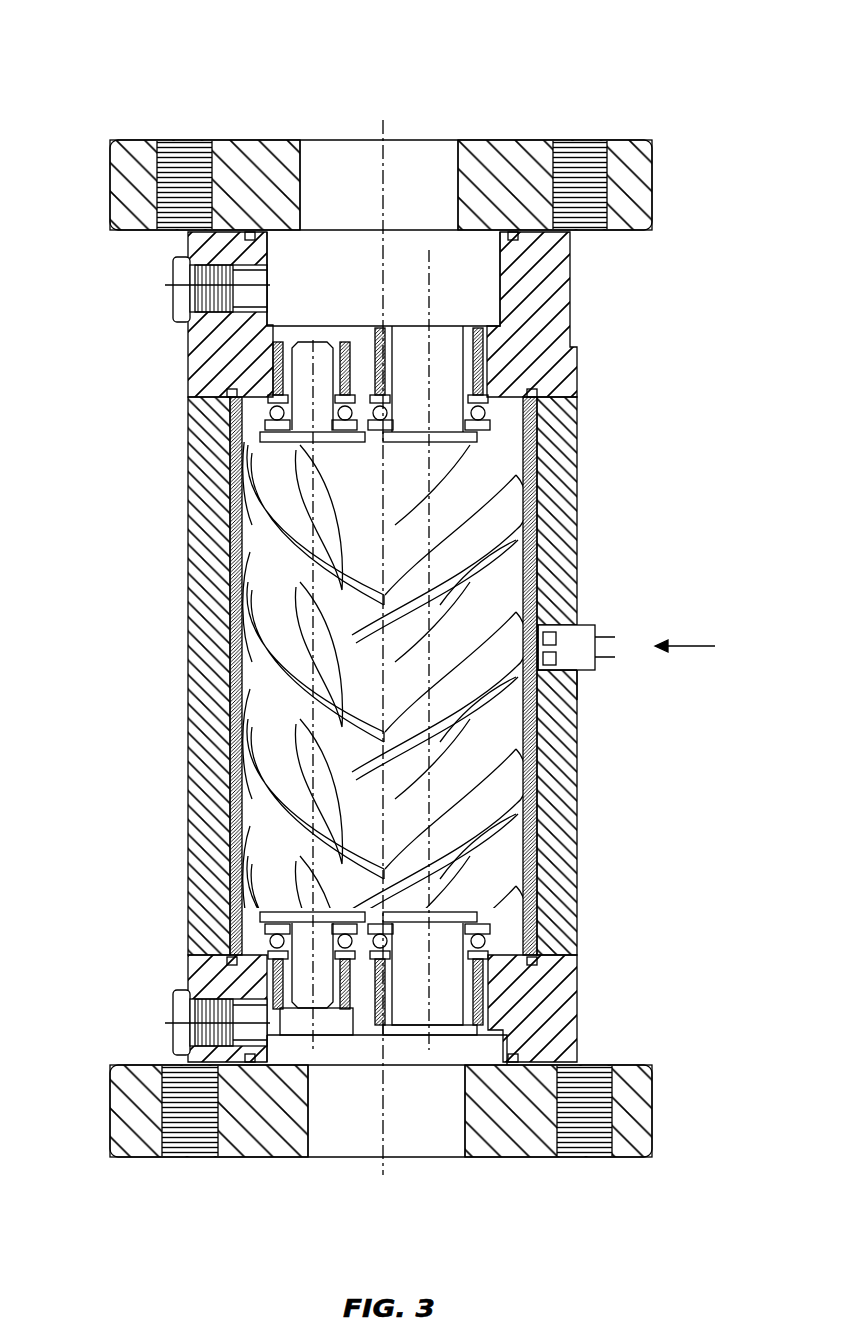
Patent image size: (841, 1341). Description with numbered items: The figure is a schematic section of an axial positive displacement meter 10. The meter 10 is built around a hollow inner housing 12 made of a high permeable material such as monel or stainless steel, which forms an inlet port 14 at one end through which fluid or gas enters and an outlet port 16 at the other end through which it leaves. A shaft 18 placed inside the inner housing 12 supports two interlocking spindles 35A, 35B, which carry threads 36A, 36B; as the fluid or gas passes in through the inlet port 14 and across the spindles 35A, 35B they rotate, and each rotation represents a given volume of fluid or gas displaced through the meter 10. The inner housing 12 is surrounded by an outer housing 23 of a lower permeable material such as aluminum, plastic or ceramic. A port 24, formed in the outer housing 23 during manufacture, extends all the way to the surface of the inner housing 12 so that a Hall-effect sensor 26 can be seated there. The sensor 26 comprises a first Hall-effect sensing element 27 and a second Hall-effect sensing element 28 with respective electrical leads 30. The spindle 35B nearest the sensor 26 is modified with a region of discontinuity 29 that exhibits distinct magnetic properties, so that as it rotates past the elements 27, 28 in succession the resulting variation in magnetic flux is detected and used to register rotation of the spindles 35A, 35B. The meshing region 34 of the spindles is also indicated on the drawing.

The axial positive displacement meter 10 is at (399, 607).
The outlet port 16 is at (415, 137).
The inlet port 14 is at (415, 1160).
The inner housing 12 is at (233, 452).
The outer housing 23 is at (210, 780).
The shaft 18 is at (381, 734).
The spindle 35A is at (268, 508).
The thread 36A is at (248, 545).
The spindle 35B is at (505, 632).
The thread 36B is at (540, 505).
The rotor meshing region 34 is at (552, 540).
The first Hall-effect sensing element 27 is at (611, 630).
The electrical leads 30 is at (600, 637).
The Hall-effect sensor 26 is at (704, 647).
The second Hall-effect sensing element 28 is at (562, 678).
The port 24 is at (568, 695).
The region of discontinuity 29 is at (550, 755).